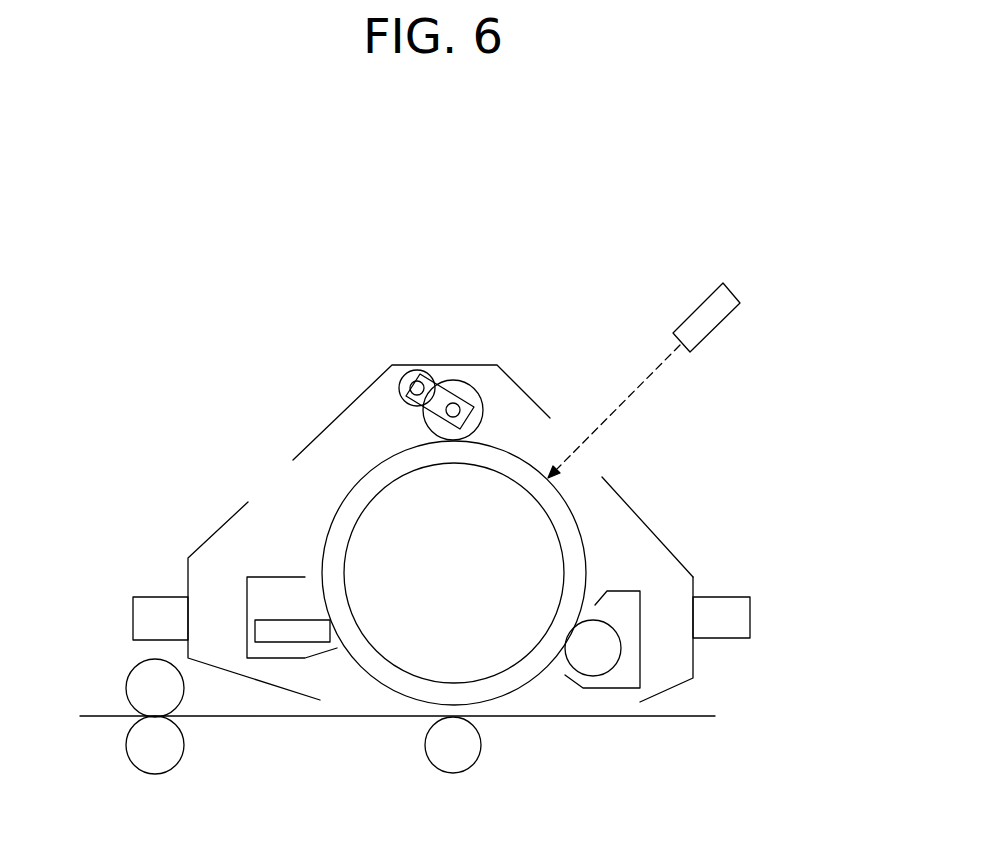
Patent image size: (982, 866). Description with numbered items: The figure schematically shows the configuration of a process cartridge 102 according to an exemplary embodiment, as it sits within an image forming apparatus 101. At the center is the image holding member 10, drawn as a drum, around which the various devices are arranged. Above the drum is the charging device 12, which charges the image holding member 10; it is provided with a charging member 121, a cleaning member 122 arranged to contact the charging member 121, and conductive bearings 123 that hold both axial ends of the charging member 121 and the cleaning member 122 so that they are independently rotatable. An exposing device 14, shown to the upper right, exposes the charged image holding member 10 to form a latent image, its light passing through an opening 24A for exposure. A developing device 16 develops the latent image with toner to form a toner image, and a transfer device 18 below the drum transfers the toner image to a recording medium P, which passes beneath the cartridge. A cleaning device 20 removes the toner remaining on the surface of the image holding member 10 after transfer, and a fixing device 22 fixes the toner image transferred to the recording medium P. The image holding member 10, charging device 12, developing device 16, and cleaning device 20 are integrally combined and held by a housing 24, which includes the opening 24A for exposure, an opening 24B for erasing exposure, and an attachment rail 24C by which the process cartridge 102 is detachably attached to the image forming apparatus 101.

The image forming apparatus 101 is at (545, 232).
The image holding member 10 is at (368, 472).
The charging device 12 is at (461, 357).
The charging member 121 is at (468, 385).
The cleaning member 122 is at (410, 372).
The conductive bearings 123 is at (440, 395).
The exposing device 14 is at (722, 320).
The developing device 16 is at (612, 600).
The transfer device 18 is at (453, 773).
The cleaning device 20 is at (278, 577).
The fixing device 22 is at (155, 775).
The housing 24 is at (663, 572).
The opening for exposure 24A is at (580, 428).
The opening for erasing exposure 24B is at (262, 480).
The attachment rail 24C is at (153, 597).
The process cartridge 102 is at (620, 495).
The recording medium P is at (657, 718).